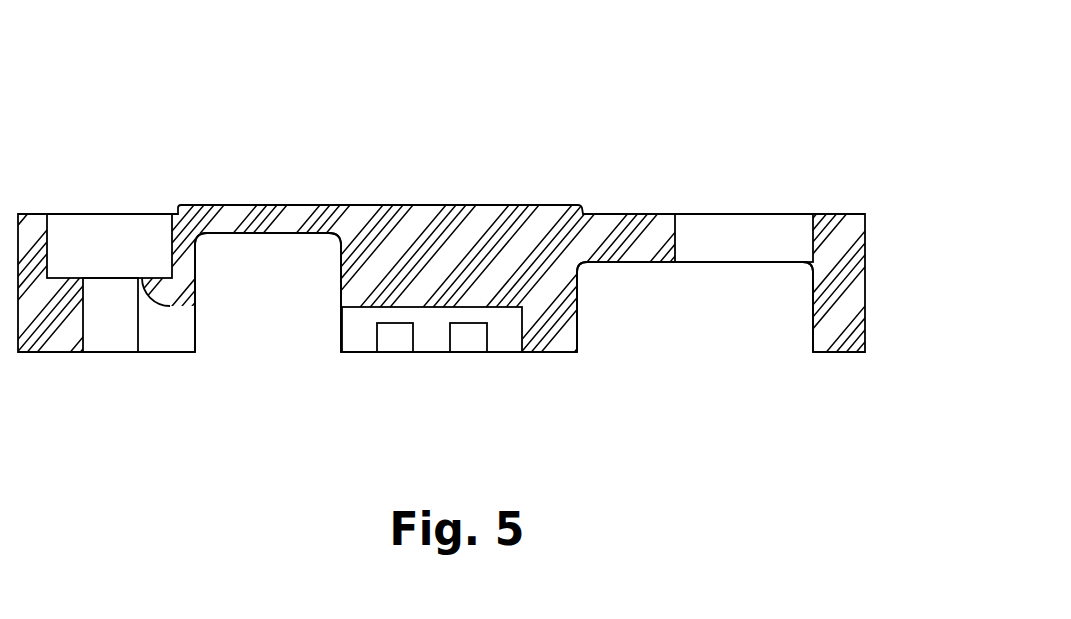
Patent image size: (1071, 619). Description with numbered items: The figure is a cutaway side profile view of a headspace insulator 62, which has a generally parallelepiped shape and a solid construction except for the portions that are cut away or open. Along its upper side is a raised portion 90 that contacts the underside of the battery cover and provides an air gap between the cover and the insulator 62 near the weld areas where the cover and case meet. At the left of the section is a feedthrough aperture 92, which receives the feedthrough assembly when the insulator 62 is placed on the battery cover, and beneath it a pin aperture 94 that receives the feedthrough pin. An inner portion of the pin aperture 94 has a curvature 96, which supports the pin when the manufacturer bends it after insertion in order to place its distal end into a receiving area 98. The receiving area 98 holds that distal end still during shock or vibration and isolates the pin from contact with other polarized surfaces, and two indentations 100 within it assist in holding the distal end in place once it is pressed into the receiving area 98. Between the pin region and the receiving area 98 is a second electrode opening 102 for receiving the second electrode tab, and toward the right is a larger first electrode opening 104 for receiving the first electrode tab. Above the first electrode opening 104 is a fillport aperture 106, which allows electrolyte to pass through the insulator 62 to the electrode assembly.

The headspace insulator 62 is at (645, 90).
The raised portion 90 is at (180, 197).
The feedthrough aperture 92 is at (126, 266).
The pin aperture 94 is at (126, 340).
The curvature 96 is at (156, 312).
The receiving area 98 is at (342, 357).
The indentations 100 is at (381, 348).
The second electrode opening 102 is at (250, 314).
The first electrode opening 104 is at (692, 328).
The fillport aperture 106 is at (724, 252).